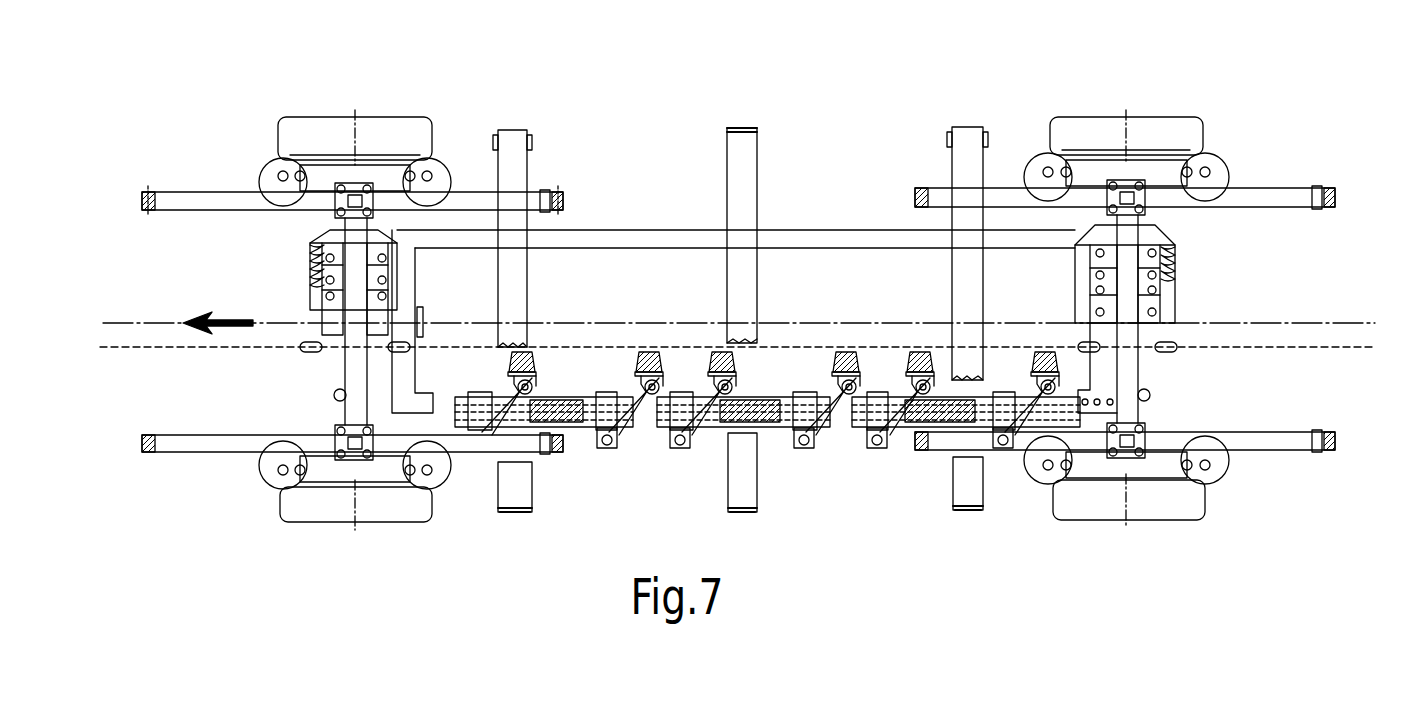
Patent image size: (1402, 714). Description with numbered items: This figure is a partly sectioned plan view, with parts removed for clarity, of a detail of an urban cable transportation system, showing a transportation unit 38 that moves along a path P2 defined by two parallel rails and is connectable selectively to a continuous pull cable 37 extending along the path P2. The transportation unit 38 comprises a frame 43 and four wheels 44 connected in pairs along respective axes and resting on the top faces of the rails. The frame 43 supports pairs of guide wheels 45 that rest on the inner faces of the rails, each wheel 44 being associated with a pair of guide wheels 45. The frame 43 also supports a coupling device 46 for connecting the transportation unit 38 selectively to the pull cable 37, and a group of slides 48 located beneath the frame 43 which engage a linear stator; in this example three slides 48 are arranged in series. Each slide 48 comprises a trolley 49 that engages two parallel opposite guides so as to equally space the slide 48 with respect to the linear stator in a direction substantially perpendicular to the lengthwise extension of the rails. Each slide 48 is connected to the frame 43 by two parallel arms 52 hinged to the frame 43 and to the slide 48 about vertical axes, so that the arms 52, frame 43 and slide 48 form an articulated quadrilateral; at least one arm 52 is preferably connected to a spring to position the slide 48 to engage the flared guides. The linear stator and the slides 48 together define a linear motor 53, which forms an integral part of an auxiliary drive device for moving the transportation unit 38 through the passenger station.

The pull cable 37 is at (165, 355).
The transportation unit 38 is at (812, 147).
The frame 43 is at (958, 112).
The wheel 44 is at (318, 135).
The guide wheel 45 is at (272, 157).
The coupling device 46 is at (300, 268).
The slide 48 is at (580, 450).
The trolley 49 is at (604, 452).
The arm 52 is at (508, 395).
The linear motor 53 is at (715, 463).
The path P2 is at (223, 318).